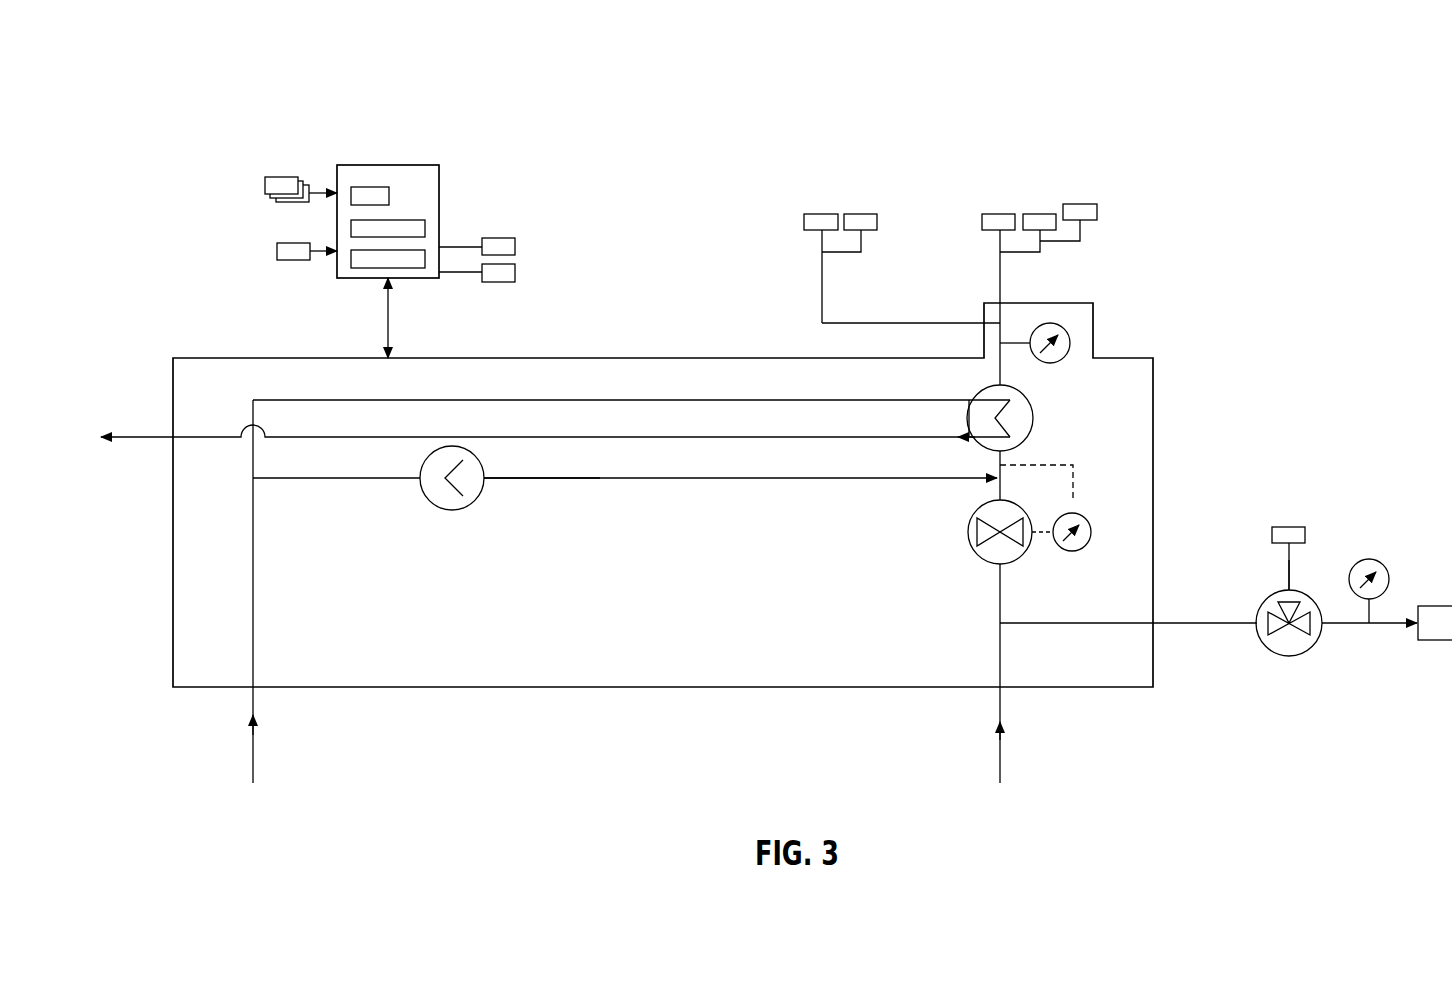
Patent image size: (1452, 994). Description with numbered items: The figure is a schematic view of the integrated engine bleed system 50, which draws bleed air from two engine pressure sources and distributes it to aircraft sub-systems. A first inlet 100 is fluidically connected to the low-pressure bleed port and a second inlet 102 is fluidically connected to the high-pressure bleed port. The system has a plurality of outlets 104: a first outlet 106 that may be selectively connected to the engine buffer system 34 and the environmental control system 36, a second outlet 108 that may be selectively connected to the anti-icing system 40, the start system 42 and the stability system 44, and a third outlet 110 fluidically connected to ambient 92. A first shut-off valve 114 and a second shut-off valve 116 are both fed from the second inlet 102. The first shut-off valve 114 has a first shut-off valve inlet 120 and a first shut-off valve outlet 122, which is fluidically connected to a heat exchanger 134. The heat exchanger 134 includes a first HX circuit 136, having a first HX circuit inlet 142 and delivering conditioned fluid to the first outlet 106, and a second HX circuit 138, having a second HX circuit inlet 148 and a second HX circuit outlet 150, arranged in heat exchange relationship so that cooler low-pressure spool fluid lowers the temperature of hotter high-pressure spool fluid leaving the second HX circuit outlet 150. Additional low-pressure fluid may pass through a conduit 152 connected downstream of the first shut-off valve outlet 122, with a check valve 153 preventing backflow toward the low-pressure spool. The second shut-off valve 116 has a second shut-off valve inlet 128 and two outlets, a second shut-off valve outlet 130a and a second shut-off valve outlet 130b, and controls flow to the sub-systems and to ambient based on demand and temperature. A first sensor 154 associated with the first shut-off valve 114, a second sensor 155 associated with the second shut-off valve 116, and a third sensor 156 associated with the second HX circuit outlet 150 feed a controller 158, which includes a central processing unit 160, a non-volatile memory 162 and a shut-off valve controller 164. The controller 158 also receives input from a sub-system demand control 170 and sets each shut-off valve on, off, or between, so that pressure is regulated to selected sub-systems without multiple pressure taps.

The engine buffer system 34 is at (822, 213).
The environmental control system 36 is at (872, 212).
The anti-icing system 40 is at (1007, 212).
The start system 42 is at (1048, 213).
The stability system 44 is at (1090, 203).
The integrated engine bleed system 50 is at (462, 690).
The ambient 92 is at (1435, 623).
The first inlet 100 is at (253, 752).
The second inlet 102 is at (1000, 747).
The plurality of outlets 104 is at (819, 283).
The first outlet 106 is at (822, 257).
The second outlet 108 is at (1000, 258).
The third outlet 110 is at (1387, 628).
The first shut-off valve 114 is at (510, 237).
The second shut-off valve 116 is at (507, 283).
The first shut-off valve inlet 120 is at (1003, 562).
The first shut-off valve outlet 122 is at (1000, 488).
The second shut-off valve inlet 128 is at (1228, 623).
The second shut-off valve outlet 130a is at (1347, 628).
The second shut-off valve outlet 130b is at (1287, 578).
The heat exchanger 134 is at (1039, 398).
The first HX circuit 136 is at (1010, 457).
The second HX circuit 138 is at (991, 396).
The first HX circuit inlet 142 is at (977, 444).
The second HX circuit inlet 148 is at (969, 413).
The second HX circuit outlet 150 is at (1017, 447).
The conduit 152 is at (538, 482).
The check valve 153 is at (445, 510).
The first sensor 154 is at (273, 177).
The second sensor 155 is at (266, 190).
The third sensor 156 is at (292, 202).
The controller 158 is at (352, 158).
The central processing unit 160 is at (372, 188).
The non-volatile memory 162 is at (418, 227).
The shut-off valve controller 164 is at (413, 260).
The sub-system demand control 170 is at (290, 258).